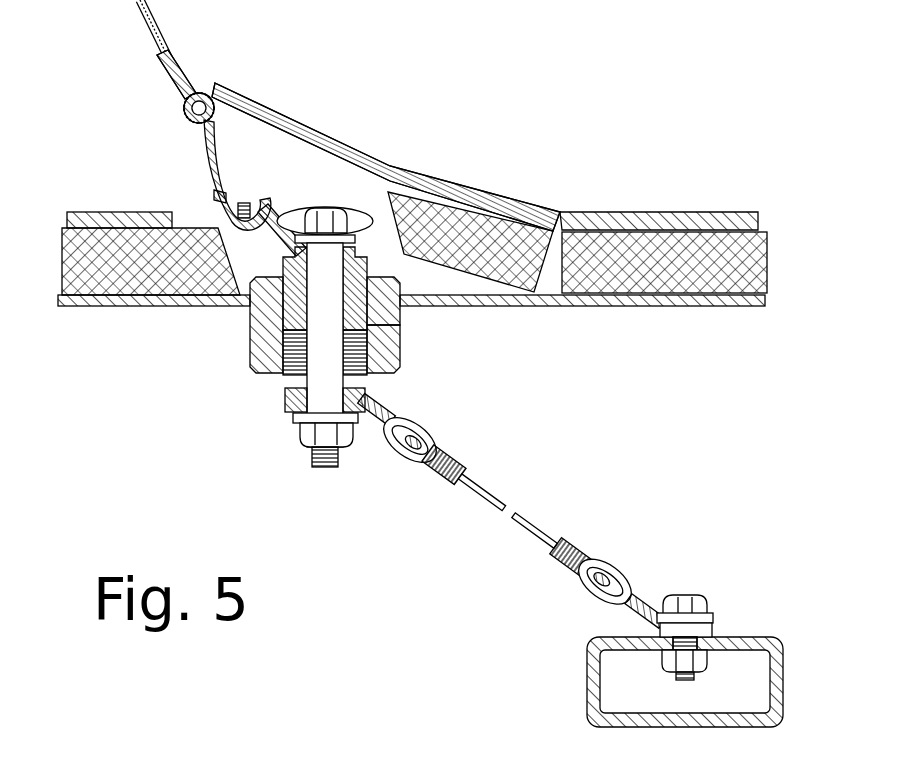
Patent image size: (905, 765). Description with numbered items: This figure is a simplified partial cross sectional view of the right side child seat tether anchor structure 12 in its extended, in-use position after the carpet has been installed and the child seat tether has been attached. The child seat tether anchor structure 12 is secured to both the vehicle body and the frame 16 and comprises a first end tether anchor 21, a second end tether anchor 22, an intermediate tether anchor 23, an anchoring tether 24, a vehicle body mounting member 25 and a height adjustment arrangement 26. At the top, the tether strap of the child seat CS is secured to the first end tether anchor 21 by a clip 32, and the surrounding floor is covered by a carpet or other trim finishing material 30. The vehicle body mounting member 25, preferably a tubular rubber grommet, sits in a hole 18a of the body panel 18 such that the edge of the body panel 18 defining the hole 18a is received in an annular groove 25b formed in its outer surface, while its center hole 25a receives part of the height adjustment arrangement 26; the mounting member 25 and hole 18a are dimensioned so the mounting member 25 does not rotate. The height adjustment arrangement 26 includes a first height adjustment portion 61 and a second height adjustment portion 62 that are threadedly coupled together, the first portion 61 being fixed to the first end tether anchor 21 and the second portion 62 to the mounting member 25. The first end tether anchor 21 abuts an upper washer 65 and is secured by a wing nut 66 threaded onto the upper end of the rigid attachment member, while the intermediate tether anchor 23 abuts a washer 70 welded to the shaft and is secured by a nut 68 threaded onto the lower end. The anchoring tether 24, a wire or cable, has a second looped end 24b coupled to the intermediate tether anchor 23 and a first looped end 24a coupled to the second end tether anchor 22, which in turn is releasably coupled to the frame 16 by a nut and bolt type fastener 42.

The child seat CS is at (170, 33).
The child seat tether anchor structure 12 is at (515, 515).
The frame 16 is at (747, 637).
The body panel 18 is at (667, 307).
The hole 18a is at (247, 325).
The first end tether anchor 21 is at (256, 212).
The second end tether anchor 22 is at (620, 620).
The intermediate tether anchor 23 is at (395, 411).
The anchoring tether 24 is at (505, 503).
The first looped end 24a is at (605, 567).
The second looped end 24b is at (393, 475).
The vehicle body mounting member 25 is at (323, 331).
The center hole 25a is at (402, 347).
The annular groove 25b is at (405, 290).
The height adjustment arrangement 26 is at (433, 200).
The carpet or other trim finishing material 30 is at (673, 212).
The clip 32 is at (220, 182).
The fastener 42 is at (700, 585).
The first height adjustment portion 61 is at (272, 380).
The second height adjustment portion 62 is at (322, 375).
The upper washer 65 is at (385, 258).
The wing nut 66 is at (350, 237).
The nut 68 is at (300, 447).
The washer 70 is at (365, 396).